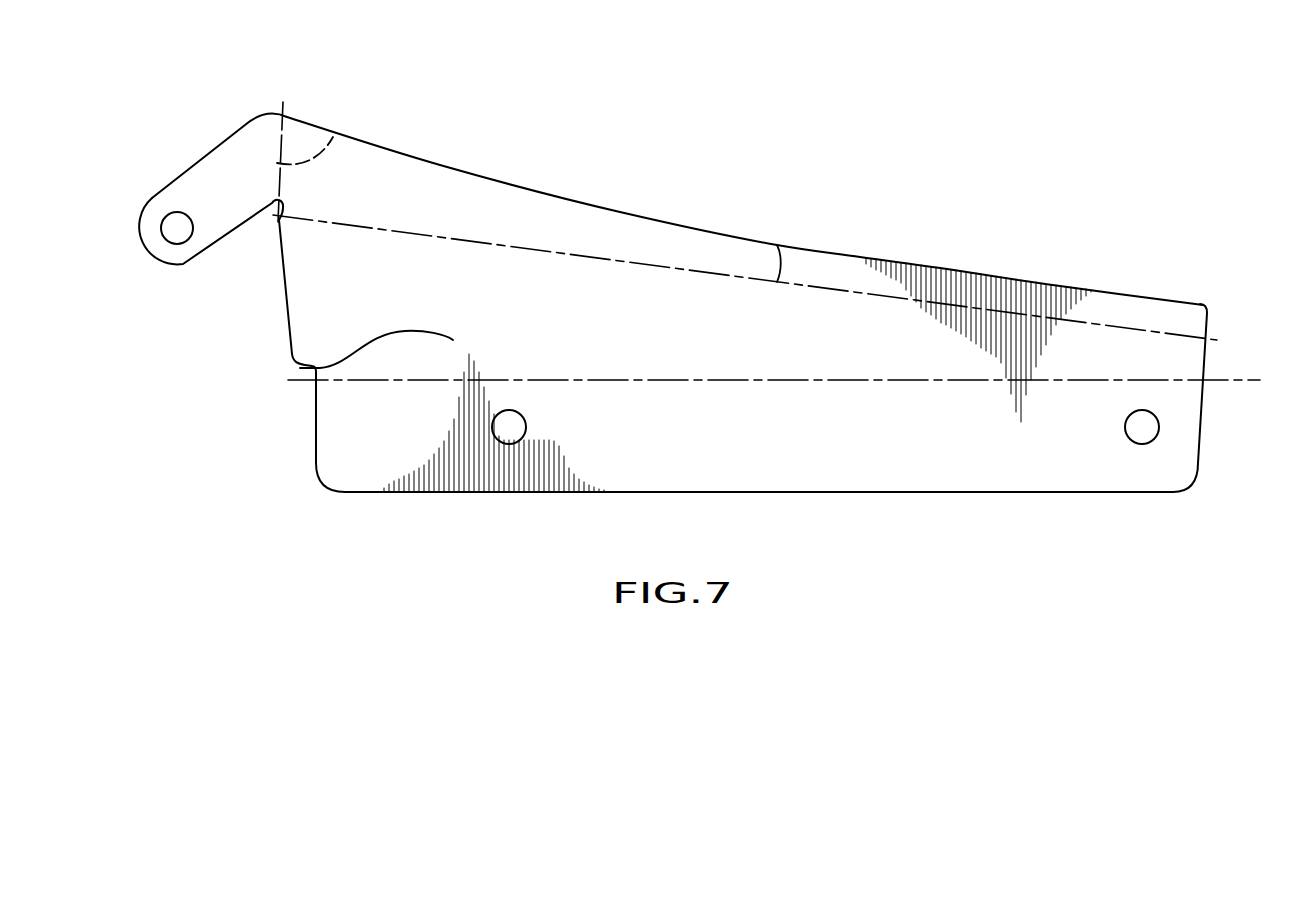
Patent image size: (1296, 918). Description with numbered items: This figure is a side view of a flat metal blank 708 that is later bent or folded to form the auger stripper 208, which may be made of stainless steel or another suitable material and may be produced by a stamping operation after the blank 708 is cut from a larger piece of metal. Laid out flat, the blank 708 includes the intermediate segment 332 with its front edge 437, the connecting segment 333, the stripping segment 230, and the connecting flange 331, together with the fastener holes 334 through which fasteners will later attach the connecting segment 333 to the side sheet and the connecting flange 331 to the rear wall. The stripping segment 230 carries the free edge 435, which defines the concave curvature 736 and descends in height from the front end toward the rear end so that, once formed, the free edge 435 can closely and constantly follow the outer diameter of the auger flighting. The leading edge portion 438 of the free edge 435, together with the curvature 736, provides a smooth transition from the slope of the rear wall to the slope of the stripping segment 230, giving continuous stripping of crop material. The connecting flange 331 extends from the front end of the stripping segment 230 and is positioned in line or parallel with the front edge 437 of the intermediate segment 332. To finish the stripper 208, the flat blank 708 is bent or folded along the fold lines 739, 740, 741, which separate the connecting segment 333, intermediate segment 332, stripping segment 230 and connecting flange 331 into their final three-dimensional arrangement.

The auger stripper 208 is at (686, 286).
The metal blank 708 is at (859, 134).
The connecting flange 331 is at (205, 178).
The fastener holes 334 is at (165, 222).
The leading edge portion 438 is at (288, 118).
The fold line 741 is at (340, 130).
The free edge 435 is at (745, 208).
The curvature 736 is at (547, 190).
The fold line 740 is at (770, 238).
The stripping segment 230 is at (823, 268).
The front edge 437 is at (288, 318).
The intermediate segment 332 is at (300, 368).
The connecting segment 333 is at (795, 452).
The fold line 739 is at (824, 380).